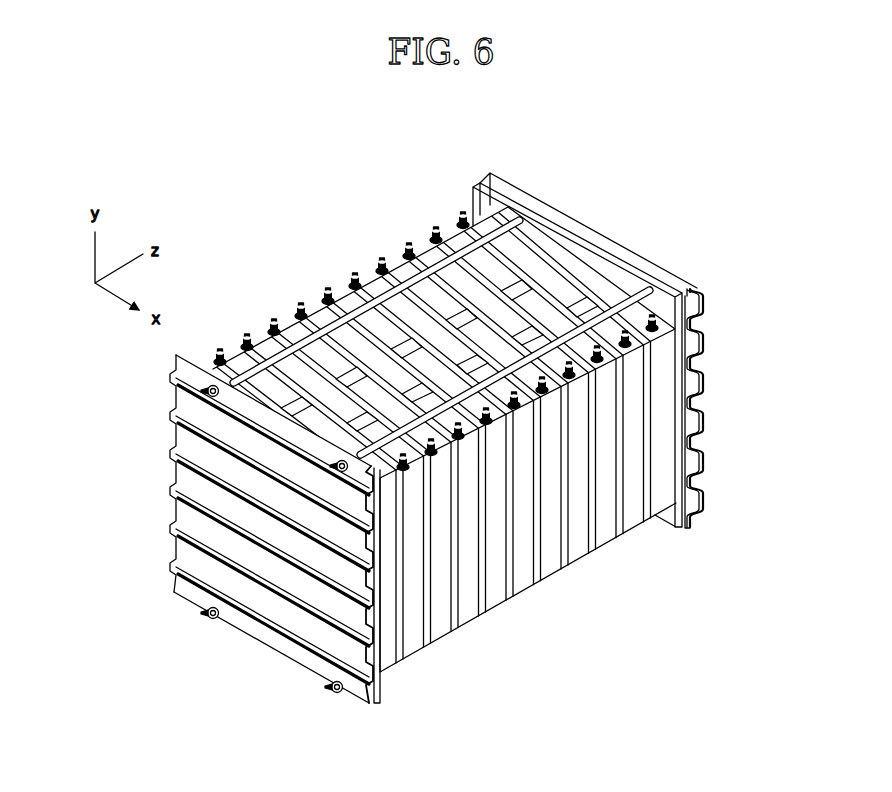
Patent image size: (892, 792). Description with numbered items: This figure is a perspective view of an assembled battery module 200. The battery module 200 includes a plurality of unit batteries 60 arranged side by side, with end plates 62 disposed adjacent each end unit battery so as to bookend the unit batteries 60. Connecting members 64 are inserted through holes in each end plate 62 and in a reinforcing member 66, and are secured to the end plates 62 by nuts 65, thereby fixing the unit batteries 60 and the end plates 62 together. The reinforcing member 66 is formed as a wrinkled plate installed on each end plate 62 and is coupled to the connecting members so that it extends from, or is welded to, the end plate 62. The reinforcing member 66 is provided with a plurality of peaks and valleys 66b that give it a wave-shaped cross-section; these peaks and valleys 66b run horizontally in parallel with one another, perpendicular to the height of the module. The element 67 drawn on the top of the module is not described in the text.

The battery module 200 is at (320, 274).
The unit batteries 60 is at (493, 585).
The end plates 62 is at (669, 522).
The connecting members 64 is at (427, 252).
The nuts 65 is at (212, 398).
The reinforcing member 66 is at (702, 510).
The peaks and valleys 66b is at (702, 412).
The terminal 67 is at (625, 342).